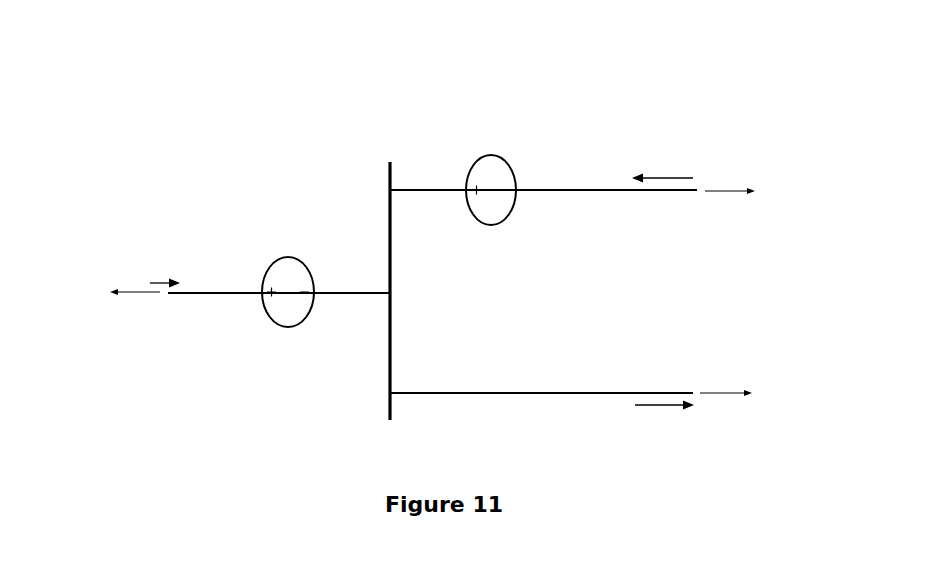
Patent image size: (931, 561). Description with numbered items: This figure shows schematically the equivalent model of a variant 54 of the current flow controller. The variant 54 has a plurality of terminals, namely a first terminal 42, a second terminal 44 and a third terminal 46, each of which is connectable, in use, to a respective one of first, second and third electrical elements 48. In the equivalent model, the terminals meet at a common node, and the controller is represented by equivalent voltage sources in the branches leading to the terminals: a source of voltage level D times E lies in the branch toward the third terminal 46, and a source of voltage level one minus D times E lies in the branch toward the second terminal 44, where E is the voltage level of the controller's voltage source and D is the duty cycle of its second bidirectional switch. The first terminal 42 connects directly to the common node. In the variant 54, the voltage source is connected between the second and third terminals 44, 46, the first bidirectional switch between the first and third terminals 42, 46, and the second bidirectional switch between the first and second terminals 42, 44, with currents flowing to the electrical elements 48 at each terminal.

The variant of the current flow controller 54 is at (338, 157).
The second terminal 44 is at (598, 198).
The first terminal 42 is at (603, 388).
The third terminal 46 is at (209, 303).
The electrical elements 48 is at (433, 291).